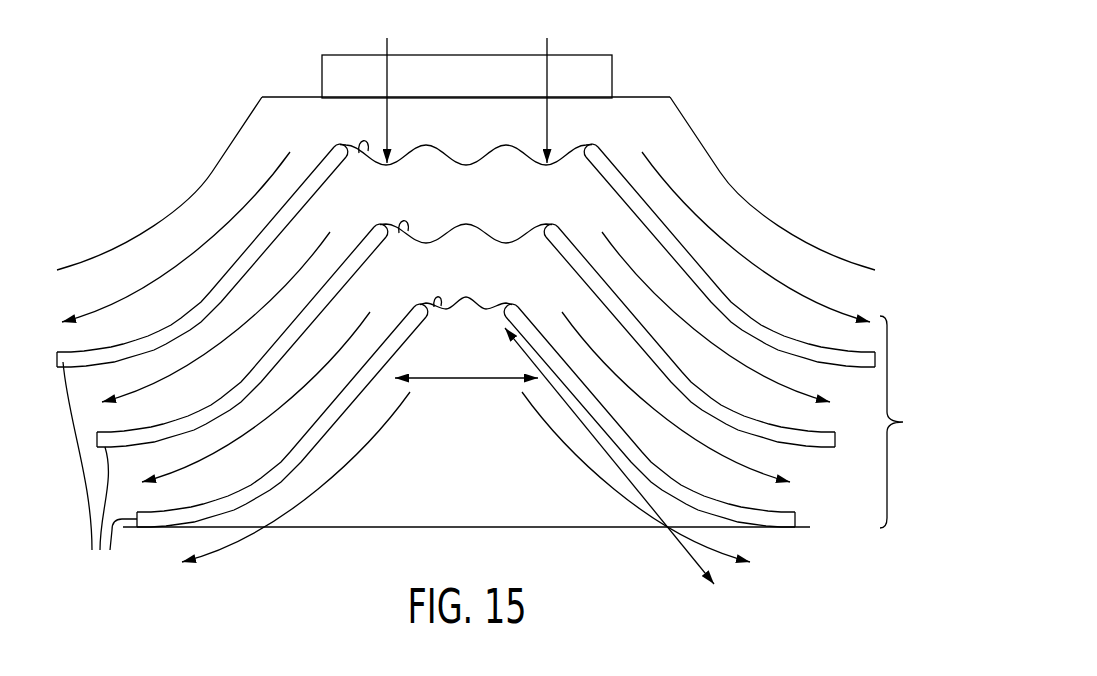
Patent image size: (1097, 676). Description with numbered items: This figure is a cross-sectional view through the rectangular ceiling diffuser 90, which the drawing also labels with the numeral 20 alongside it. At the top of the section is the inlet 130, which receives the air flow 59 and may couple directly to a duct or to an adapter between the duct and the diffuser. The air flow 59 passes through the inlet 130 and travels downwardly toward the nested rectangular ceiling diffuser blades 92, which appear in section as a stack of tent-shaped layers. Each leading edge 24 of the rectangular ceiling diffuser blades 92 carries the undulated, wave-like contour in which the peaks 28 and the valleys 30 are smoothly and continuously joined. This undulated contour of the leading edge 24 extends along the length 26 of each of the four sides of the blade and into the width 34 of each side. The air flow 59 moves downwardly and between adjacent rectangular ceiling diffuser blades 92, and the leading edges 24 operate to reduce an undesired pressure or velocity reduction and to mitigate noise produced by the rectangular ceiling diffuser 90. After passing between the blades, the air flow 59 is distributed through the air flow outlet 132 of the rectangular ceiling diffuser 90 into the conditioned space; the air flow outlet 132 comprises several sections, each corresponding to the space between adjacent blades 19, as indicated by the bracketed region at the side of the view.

The adjacent blades 19 is at (100, 472).
The filter assembly 20 is at (466, 312).
The leading edge 24 is at (362, 150).
The length 26 is at (475, 379).
The peaks 28 is at (490, 297).
The valleys 30 is at (466, 203).
The width 34 is at (606, 461).
The air flow 59 is at (549, 73).
The rectangular ceiling diffuser 90 is at (185, 150).
The rectangular ceiling diffuser blades 92 is at (100, 456).
The inlet 130 is at (613, 77).
The air flow outlet 132 is at (912, 422).